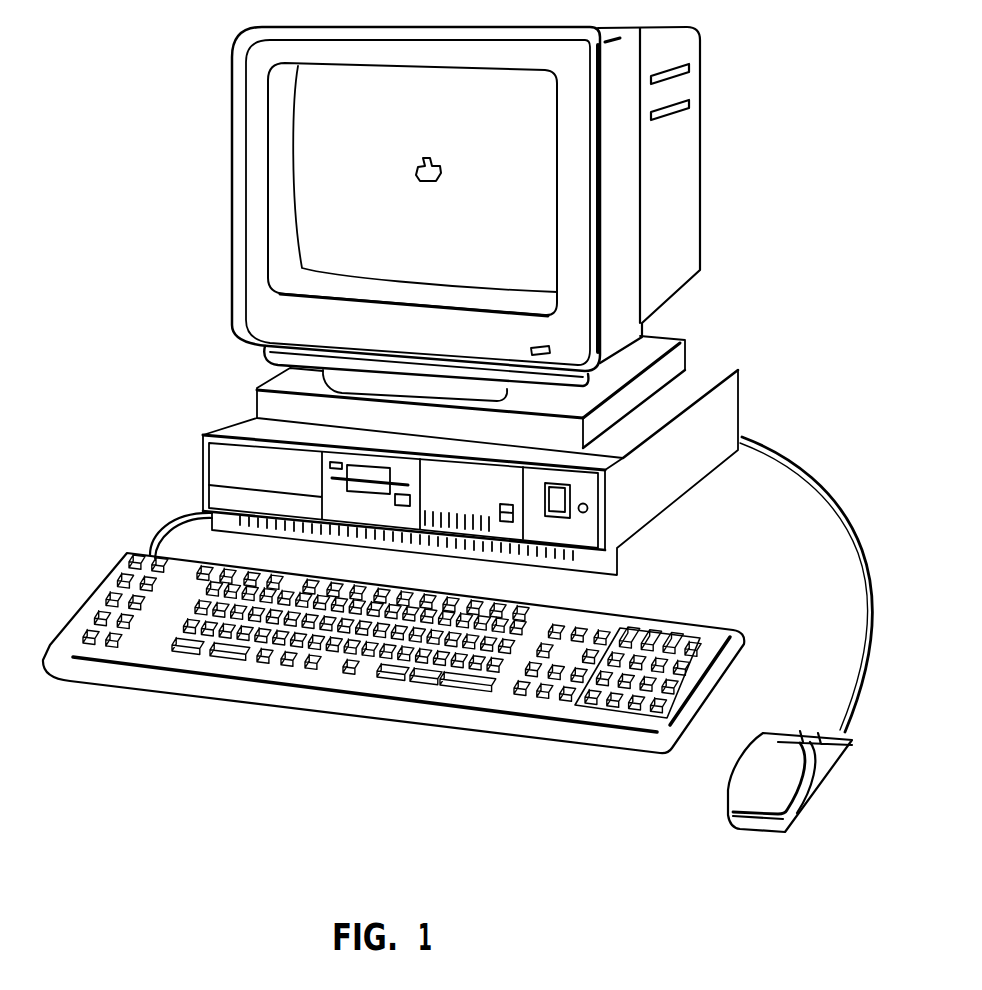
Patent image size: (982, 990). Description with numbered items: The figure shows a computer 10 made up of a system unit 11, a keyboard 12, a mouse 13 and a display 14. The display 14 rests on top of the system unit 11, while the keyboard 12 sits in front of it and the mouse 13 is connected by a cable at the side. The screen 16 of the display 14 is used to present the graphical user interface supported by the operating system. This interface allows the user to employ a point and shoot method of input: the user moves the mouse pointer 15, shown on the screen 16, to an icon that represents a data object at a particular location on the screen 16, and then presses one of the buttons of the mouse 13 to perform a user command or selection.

The computer 10 is at (155, 272).
The system unit 11 is at (203, 452).
The keyboard 12 is at (80, 682).
The mouse 13 is at (837, 777).
The display 14 is at (232, 172).
The mouse pointer 15 is at (427, 158).
The screen 16 is at (377, 218).